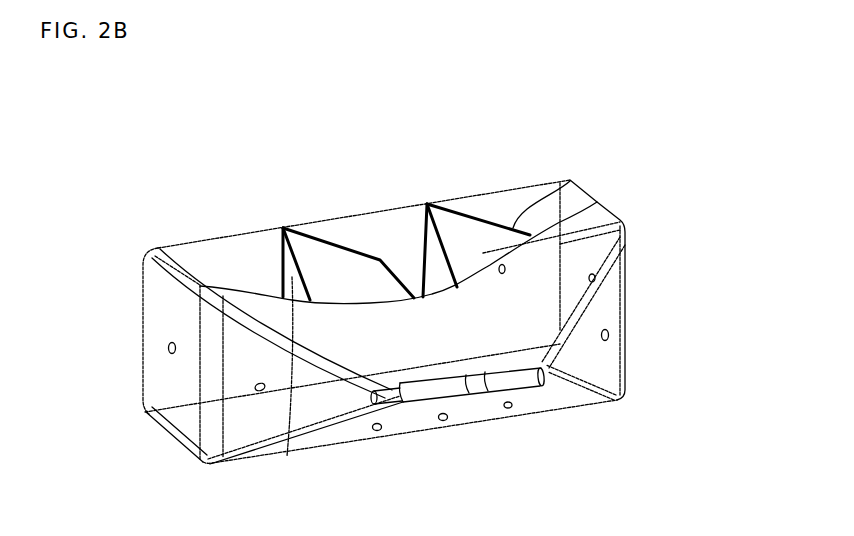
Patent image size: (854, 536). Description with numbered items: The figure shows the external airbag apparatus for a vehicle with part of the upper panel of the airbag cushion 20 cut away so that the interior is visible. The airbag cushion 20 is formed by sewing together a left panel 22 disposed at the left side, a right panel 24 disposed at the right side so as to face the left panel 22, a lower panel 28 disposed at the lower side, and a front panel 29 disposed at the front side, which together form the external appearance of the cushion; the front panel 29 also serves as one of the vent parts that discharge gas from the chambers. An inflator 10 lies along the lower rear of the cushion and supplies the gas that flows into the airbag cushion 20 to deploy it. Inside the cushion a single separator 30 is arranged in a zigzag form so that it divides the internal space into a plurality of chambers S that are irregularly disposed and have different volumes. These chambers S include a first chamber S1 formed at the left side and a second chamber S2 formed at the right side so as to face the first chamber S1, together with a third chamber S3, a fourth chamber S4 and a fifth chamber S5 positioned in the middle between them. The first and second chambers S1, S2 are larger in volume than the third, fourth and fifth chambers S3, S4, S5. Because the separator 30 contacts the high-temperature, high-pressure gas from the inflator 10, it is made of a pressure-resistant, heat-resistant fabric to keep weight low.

The inflator 10 is at (513, 378).
The airbag cushion 20 is at (624, 180).
The left panel 22 is at (160, 379).
The right panel 24 is at (608, 288).
The lower panel 28 is at (352, 430).
The front panel 29 is at (225, 255).
The separator 30 is at (533, 192).
The chambers S is at (250, 172).
The first chamber S1 is at (263, 260).
The second chamber S2 is at (507, 205).
The third chamber S3 is at (330, 273).
The fourth chamber S4 is at (397, 243).
The fifth chamber S5 is at (468, 237).